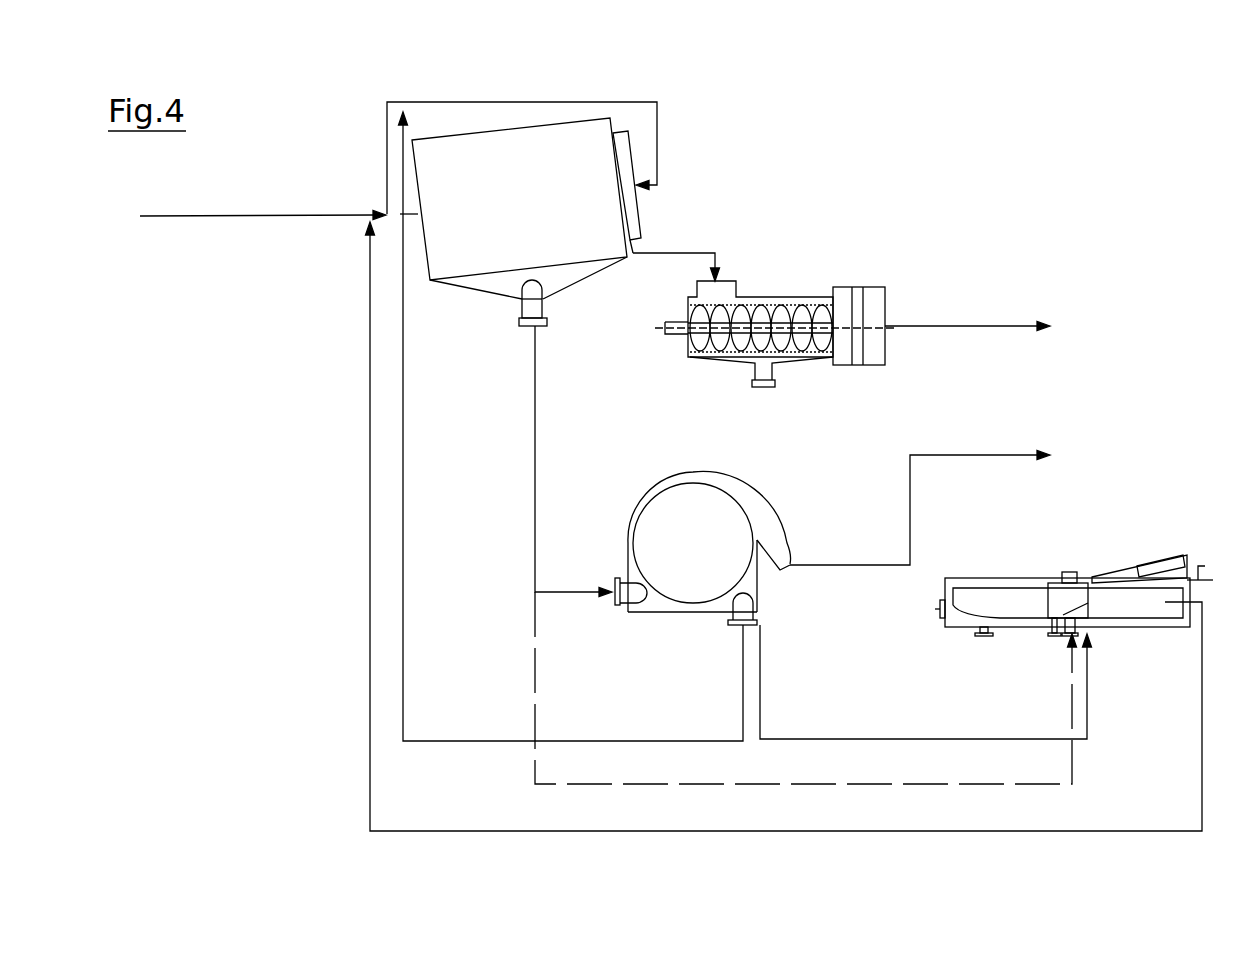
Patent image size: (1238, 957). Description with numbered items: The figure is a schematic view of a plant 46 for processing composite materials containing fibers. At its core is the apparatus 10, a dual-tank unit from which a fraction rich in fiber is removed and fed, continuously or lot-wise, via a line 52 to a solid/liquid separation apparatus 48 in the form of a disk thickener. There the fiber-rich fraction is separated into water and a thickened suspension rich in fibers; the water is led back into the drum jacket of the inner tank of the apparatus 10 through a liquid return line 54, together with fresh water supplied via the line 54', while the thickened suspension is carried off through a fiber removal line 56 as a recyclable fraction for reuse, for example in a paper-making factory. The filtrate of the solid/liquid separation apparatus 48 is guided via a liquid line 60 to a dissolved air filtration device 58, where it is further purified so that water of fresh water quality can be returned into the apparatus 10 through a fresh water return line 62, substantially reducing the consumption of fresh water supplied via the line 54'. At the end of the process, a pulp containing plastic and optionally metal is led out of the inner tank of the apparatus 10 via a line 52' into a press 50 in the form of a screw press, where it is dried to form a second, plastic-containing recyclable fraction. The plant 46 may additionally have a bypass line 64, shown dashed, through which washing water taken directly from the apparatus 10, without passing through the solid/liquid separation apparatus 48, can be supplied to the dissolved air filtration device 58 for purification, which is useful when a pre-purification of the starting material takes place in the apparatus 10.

The apparatus 10 is at (568, 168).
The plant 46 is at (974, 180).
The solid/liquid separation apparatus 48 is at (717, 525).
The press 50 is at (786, 352).
The line 52 is at (575, 461).
The line 52' is at (685, 230).
The liquid return line 54 is at (571, 426).
The line 54' is at (398, 194).
The fiber removal line 56 is at (912, 502).
The dissolved air filtration device 58 is at (1020, 603).
The liquid line 60 is at (833, 735).
The fresh water return line 62 is at (368, 453).
The bypass line 64 is at (1072, 773).